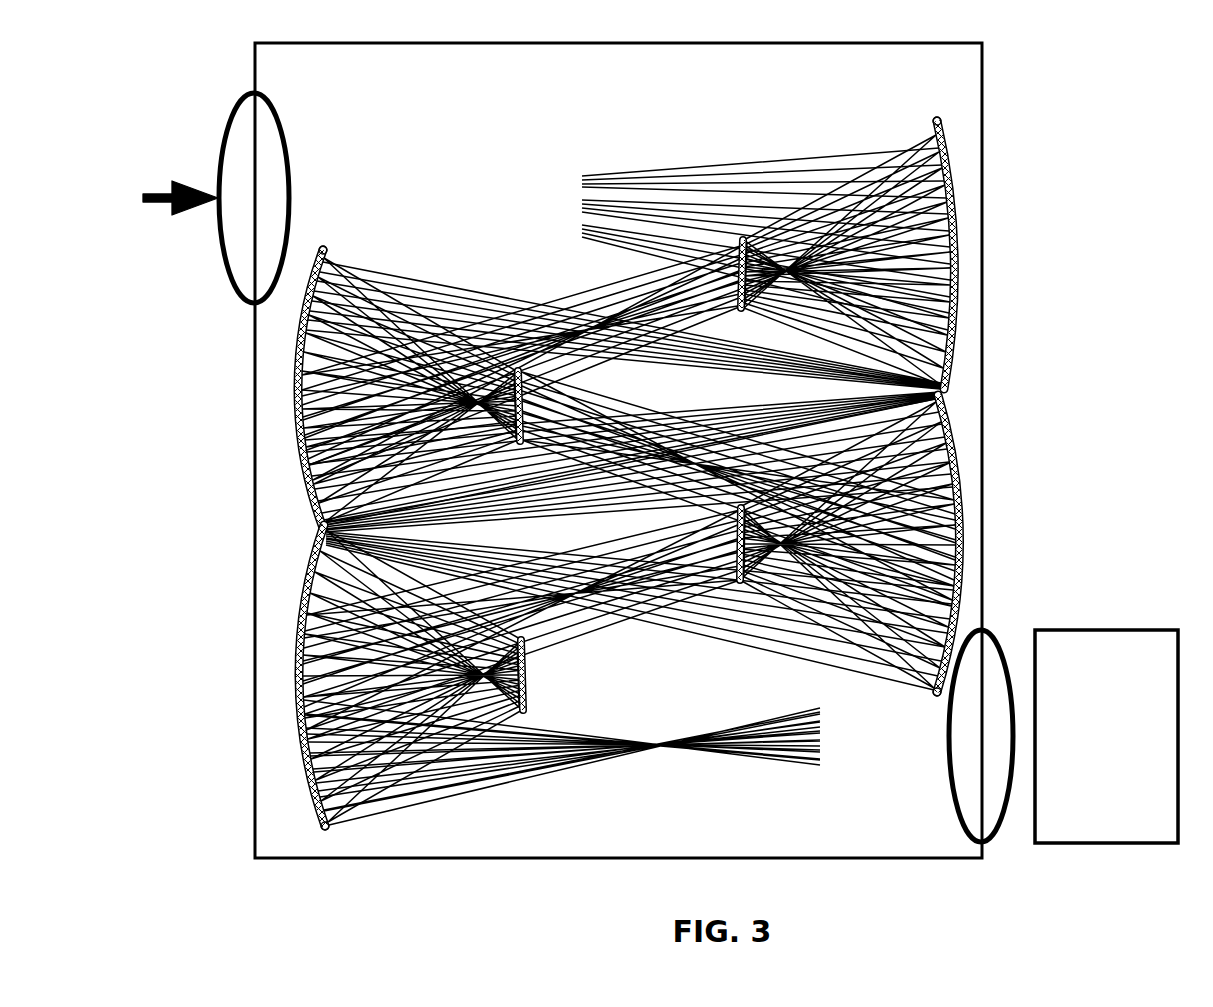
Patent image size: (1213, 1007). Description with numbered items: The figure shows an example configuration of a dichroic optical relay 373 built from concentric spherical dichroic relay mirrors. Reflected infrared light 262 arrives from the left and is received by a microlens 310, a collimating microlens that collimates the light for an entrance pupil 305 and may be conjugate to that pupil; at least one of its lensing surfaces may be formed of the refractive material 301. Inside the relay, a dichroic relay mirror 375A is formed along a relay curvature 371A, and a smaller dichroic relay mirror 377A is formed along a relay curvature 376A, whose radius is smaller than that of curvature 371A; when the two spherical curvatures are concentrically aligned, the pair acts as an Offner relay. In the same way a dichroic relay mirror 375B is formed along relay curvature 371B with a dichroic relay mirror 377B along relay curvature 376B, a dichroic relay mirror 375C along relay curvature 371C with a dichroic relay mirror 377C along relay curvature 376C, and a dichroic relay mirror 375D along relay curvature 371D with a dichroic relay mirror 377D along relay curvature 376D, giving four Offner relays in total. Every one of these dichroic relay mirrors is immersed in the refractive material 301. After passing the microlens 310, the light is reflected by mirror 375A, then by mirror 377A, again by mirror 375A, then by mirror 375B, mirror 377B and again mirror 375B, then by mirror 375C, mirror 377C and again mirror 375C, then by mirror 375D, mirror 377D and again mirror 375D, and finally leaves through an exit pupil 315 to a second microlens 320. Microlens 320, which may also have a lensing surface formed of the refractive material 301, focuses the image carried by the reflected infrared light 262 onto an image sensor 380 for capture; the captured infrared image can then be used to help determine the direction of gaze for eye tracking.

The reflected infrared light 262 is at (180, 185).
The refractive material 301 is at (618, 450).
The entrance pupil 305 is at (636, 172).
The microlens 310 is at (254, 198).
The exit pupil 315 is at (657, 776).
The microlens 320 is at (981, 736).
The relay curvature 371A is at (957, 149).
The relay curvature 371B is at (291, 340).
The relay curvature 371C is at (963, 470).
The relay curvature 371D is at (292, 597).
The dichroic optical relay 373 is at (983, 65).
The dichroic relay mirror 375A is at (937, 118).
The dichroic relay mirror 375B is at (330, 251).
The dichroic relay mirror 375C is at (937, 694).
The dichroic relay mirror 375D is at (330, 826).
The relay curvature 376A is at (737, 278).
The relay curvature 376B is at (528, 409).
The relay curvature 376C is at (735, 541).
The relay curvature 376D is at (531, 668).
The dichroic relay mirror 377A is at (741, 267).
The dichroic relay mirror 377B is at (523, 383).
The dichroic relay mirror 377C is at (740, 527).
The dichroic relay mirror 377D is at (527, 662).
The image sensor 380 is at (1106, 736).